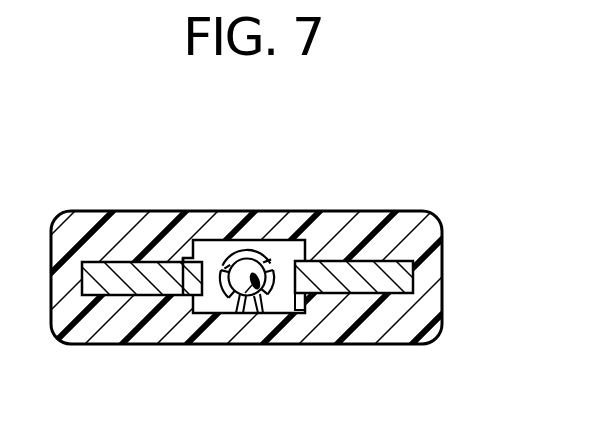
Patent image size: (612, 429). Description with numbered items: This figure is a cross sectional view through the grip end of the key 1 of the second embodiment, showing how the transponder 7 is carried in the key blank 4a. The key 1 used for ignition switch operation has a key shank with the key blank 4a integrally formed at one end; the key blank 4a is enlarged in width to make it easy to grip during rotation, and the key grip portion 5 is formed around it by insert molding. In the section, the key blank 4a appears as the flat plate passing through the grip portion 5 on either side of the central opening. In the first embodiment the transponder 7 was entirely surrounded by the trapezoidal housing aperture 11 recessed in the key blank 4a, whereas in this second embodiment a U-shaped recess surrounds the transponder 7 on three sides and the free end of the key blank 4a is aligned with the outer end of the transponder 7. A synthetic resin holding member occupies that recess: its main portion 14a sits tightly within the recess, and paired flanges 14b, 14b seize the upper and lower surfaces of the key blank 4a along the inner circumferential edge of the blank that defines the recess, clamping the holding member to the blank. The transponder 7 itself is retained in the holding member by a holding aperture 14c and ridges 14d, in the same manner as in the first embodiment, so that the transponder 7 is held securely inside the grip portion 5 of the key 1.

The key 1 is at (407, 168).
The key grip portion 5 is at (412, 209).
The key blank 4a is at (115, 262).
The transponder 7 is at (244, 251).
The housing aperture 11 is at (284, 262).
The main portion 14a is at (165, 297).
The flanges 14b is at (208, 272).
The holding aperture 14c is at (246, 304).
The ridges 14d is at (262, 268).